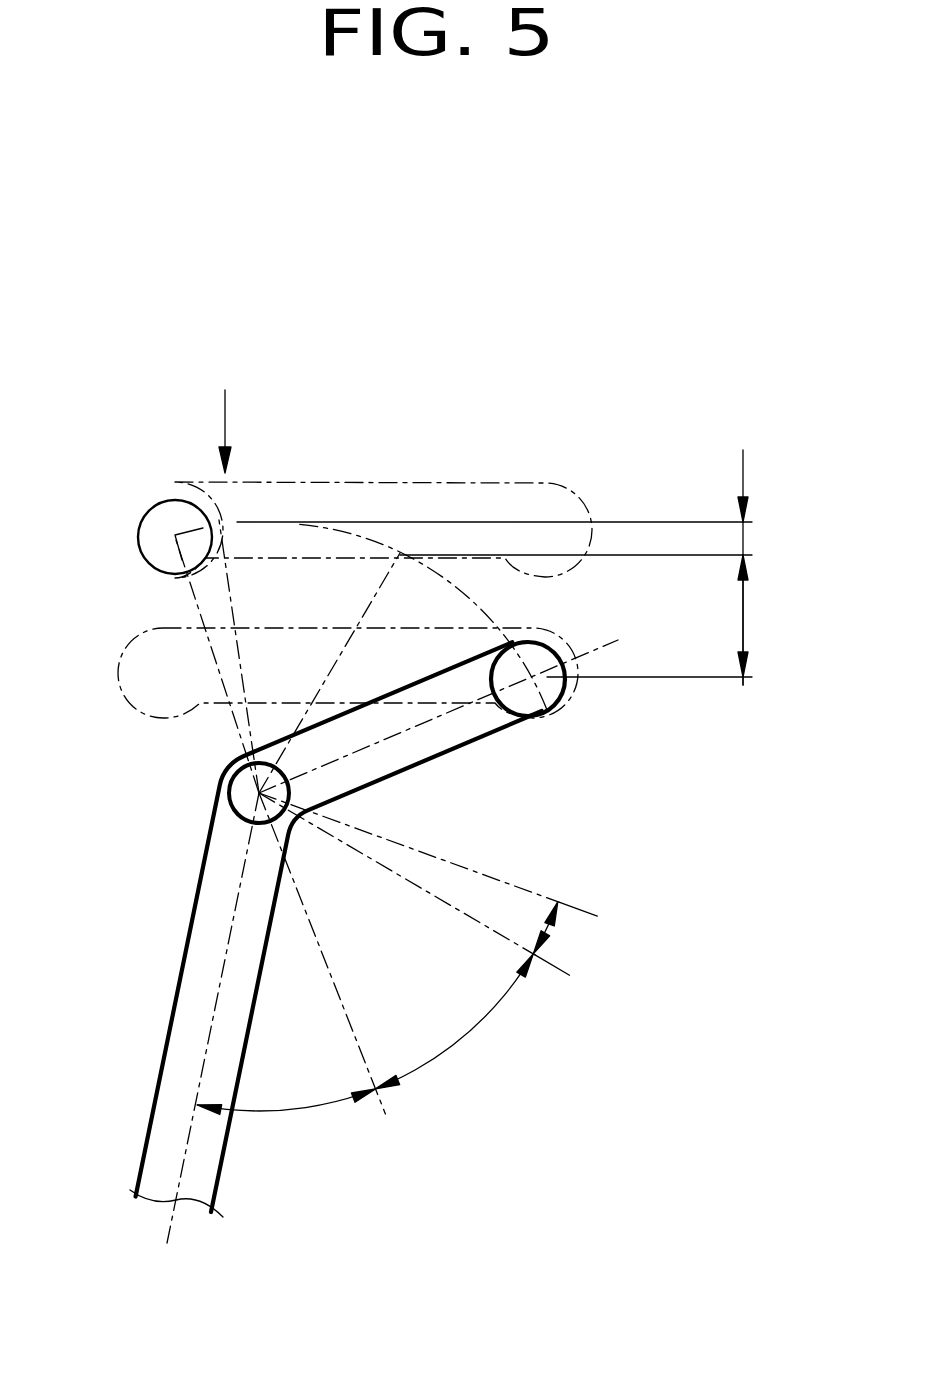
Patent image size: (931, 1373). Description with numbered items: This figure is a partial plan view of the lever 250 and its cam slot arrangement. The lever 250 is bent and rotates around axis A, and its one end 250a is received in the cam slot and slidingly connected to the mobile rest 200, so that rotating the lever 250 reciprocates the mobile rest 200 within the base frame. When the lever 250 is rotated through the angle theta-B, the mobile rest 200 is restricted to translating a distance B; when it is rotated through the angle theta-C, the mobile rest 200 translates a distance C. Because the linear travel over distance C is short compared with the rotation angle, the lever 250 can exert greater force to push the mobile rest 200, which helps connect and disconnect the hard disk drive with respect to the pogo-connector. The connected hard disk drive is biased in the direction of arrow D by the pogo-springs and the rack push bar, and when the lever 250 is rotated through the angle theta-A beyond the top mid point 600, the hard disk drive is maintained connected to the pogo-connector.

The mobile rest 200 is at (505, 522).
The top mid point 600 is at (219, 525).
The lever 250 is at (185, 1038).
The end of the lever 250a is at (533, 718).
The axis A is at (255, 793).
The distance B is at (683, 622).
The distance C is at (609, 567).
The arrow D is at (197, 429).